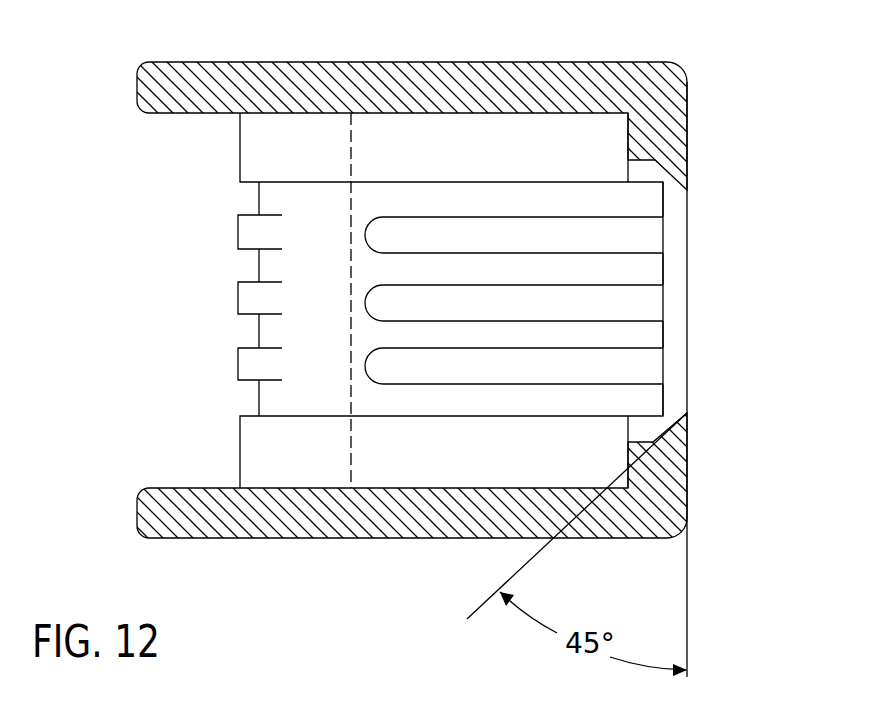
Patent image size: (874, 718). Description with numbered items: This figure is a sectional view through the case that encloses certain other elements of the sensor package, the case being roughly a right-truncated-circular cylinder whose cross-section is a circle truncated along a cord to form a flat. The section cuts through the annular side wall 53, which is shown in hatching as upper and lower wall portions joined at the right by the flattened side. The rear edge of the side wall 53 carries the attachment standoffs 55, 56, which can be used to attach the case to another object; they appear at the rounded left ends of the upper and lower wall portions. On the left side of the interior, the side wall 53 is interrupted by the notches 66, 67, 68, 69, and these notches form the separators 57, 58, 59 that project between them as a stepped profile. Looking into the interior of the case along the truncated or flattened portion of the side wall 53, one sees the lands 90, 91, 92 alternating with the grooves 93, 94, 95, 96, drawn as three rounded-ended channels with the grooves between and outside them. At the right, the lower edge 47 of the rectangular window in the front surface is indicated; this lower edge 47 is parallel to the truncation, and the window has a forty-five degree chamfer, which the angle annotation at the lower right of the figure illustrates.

The lower edge 47 is at (692, 308).
The annular side wall 53 is at (366, 315).
The attachment standoff 55 is at (148, 78).
The attachment standoff 56 is at (187, 530).
The separator 57 is at (245, 236).
The separator 58 is at (245, 302).
The separator 59 is at (245, 366).
The notch 66 is at (265, 203).
The notch 67 is at (272, 266).
The notch 68 is at (265, 330).
The notch 69 is at (265, 397).
The land 90 is at (653, 241).
The land 91 is at (653, 301).
The land 92 is at (653, 366).
The groove 93 is at (653, 203).
The groove 94 is at (653, 270).
The groove 95 is at (653, 333).
The groove 96 is at (653, 401).